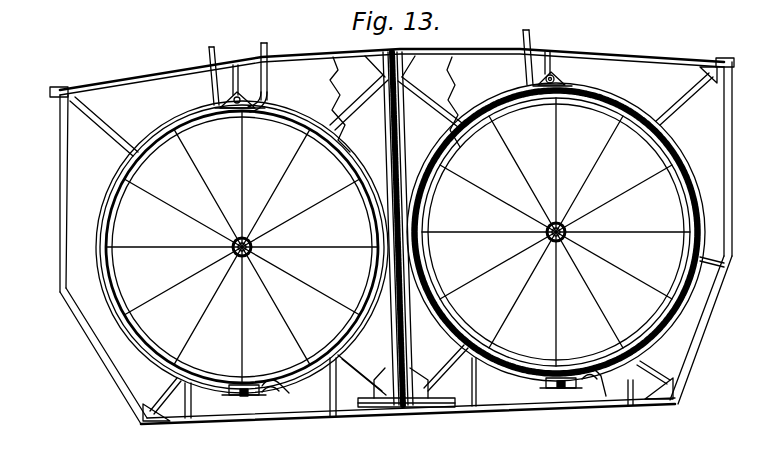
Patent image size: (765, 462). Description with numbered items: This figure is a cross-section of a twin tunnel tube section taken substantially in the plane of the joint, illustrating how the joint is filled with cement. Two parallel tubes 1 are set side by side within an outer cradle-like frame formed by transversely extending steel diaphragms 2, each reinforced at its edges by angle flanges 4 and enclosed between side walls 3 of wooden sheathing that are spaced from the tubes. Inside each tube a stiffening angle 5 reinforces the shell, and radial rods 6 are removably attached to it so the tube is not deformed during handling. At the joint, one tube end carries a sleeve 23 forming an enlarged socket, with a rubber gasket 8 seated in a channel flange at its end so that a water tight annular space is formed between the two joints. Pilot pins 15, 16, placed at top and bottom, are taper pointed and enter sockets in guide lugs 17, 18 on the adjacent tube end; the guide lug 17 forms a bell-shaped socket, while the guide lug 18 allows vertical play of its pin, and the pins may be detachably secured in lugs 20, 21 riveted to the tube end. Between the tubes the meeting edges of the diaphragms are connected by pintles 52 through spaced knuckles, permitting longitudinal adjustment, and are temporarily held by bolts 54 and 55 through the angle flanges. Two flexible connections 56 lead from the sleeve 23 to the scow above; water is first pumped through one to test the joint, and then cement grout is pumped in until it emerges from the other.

The tube 1 is at (105, 244).
The diaphragm 2 is at (485, 62).
The side wall 3 is at (60, 184).
The angle flange 4 is at (70, 160).
The stiffening angle 5 is at (116, 212).
The radial rod 6 is at (173, 162).
The rubber gasket 8 is at (333, 412).
The pilot pin 15 is at (268, 84).
The pilot pin 16 is at (247, 400).
The guide lug 17 is at (222, 98).
The guide lug 18 is at (240, 398).
The lug 20 is at (566, 83).
The lug 21 is at (550, 390).
The sleeve 23 is at (616, 112).
The pintle 52 is at (406, 410).
The bolt 54 is at (390, 98).
The column post 55 is at (401, 98).
The flexible connection 56 is at (208, 52).